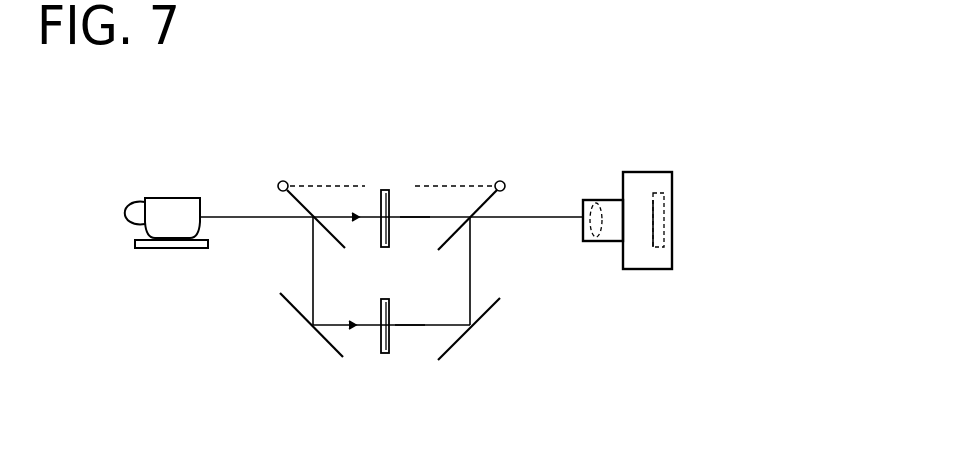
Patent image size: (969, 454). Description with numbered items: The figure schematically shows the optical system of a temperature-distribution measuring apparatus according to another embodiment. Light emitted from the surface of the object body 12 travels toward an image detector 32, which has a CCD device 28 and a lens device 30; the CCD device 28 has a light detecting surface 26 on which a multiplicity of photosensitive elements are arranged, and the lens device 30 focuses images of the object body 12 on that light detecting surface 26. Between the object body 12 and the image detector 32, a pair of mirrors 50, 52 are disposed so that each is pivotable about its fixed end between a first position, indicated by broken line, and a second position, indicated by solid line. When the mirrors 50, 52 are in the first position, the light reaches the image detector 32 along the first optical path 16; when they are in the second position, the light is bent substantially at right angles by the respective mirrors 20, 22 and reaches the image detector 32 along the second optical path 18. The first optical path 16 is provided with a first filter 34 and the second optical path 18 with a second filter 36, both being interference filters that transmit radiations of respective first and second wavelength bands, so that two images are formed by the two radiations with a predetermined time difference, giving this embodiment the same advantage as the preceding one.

The object body 12 is at (165, 207).
The first optical path 16 is at (413, 222).
The second optical path 18 is at (410, 323).
The mirror 20 is at (288, 302).
The mirror 22 is at (496, 302).
The light detecting surface 26 is at (650, 238).
The CCD device 28 is at (663, 210).
The lens device 30 is at (583, 208).
The image detector 32 is at (666, 258).
The first filter 34 is at (386, 188).
The second filter 36 is at (385, 353).
The mirror 50 is at (288, 200).
The mirror 52 is at (489, 199).